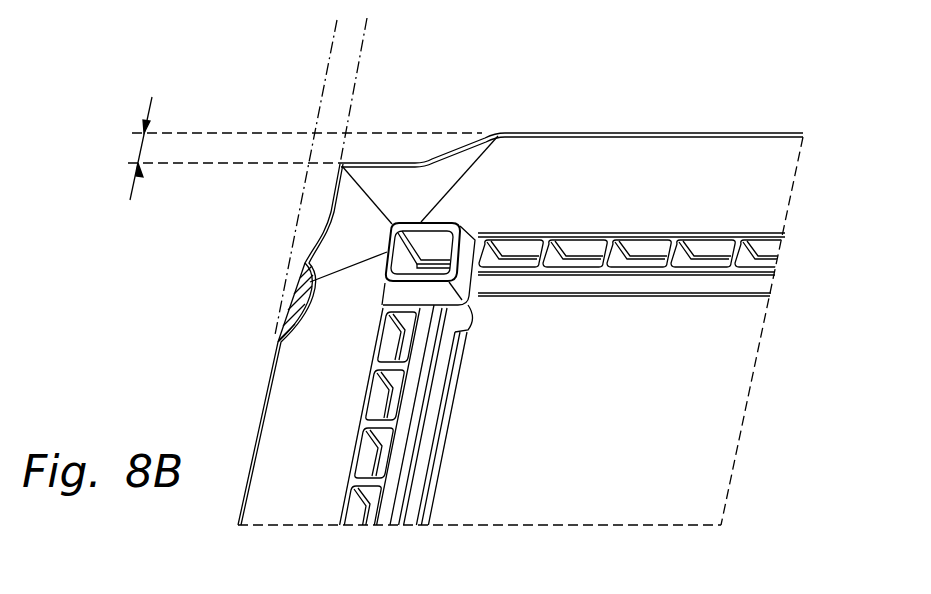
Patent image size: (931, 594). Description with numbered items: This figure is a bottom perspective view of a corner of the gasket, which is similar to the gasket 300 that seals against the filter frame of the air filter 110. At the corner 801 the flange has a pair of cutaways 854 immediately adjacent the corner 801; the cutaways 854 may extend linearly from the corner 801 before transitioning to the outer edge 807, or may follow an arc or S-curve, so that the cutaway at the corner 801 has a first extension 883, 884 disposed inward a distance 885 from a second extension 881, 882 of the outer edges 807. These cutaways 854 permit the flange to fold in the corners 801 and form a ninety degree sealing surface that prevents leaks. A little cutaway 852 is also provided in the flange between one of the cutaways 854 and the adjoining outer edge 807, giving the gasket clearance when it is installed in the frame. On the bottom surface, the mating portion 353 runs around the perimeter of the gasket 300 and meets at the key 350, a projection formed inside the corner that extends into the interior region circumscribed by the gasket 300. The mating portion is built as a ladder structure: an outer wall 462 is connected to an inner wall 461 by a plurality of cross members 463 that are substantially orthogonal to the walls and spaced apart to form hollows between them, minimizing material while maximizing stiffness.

The air filter 110 is at (186, 35).
The gasket 300 is at (295, 377).
The key 350 is at (413, 222).
The mating portion 353 is at (638, 285).
The inner wall 461 is at (412, 397).
The outer wall 462 is at (365, 465).
The cross members 463 is at (402, 429).
The corner 801 is at (338, 163).
The outer edge 807 is at (258, 414).
The little cutaway 852 is at (283, 302).
The cutaways 854 is at (442, 150).
The second extension 881 is at (333, 35).
The second extension 882 is at (222, 133).
The first extension 883 is at (220, 163).
The first extension 884 is at (366, 38).
The distance 885 is at (140, 145).